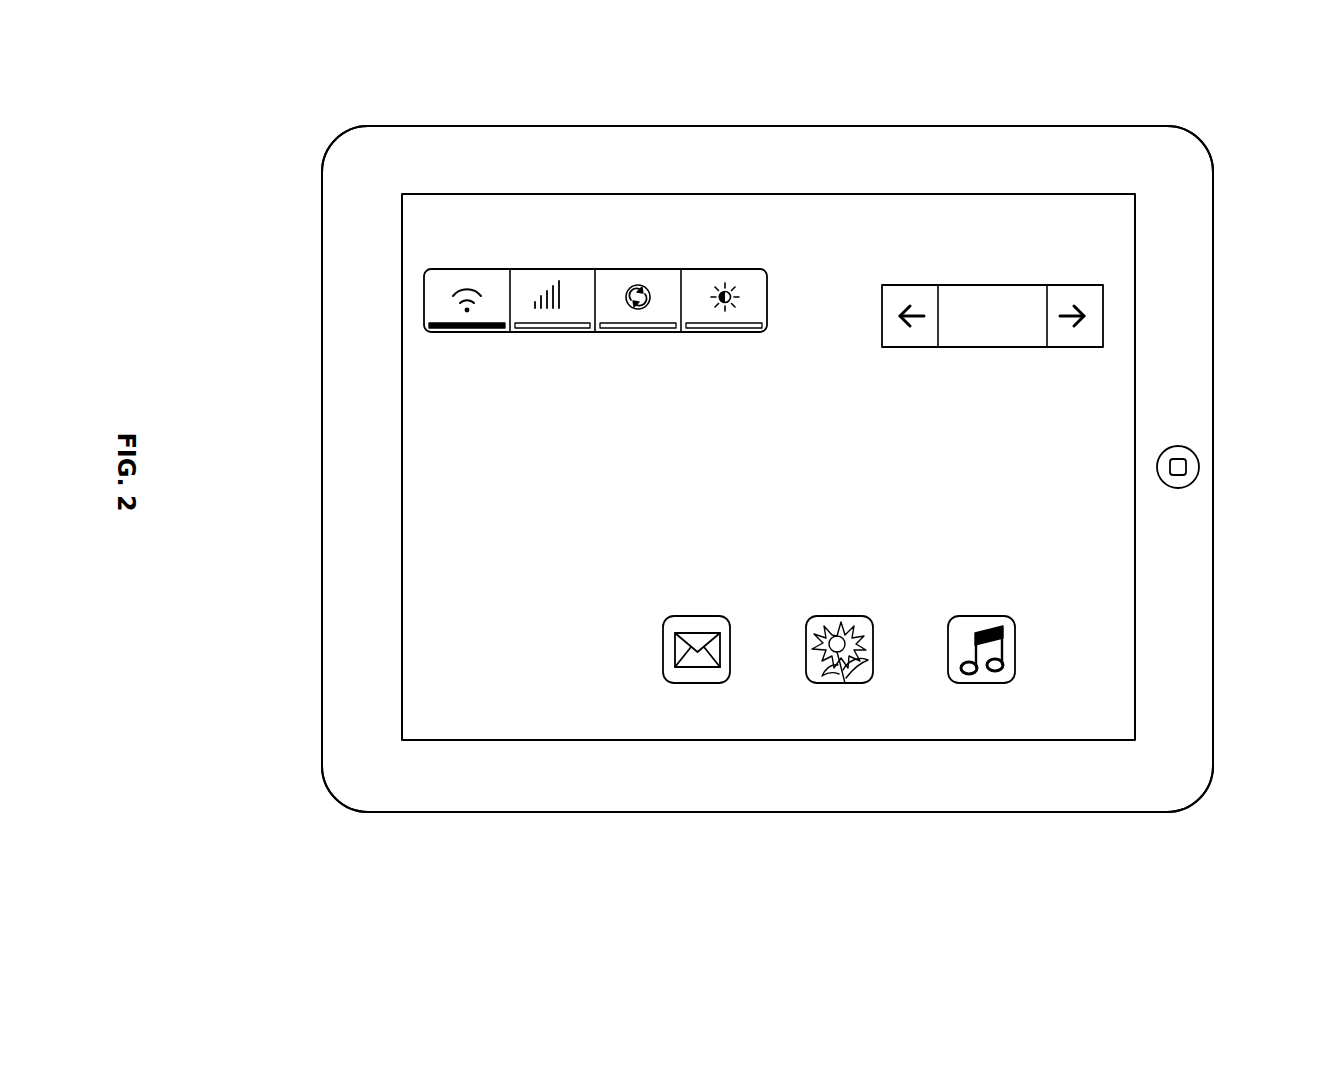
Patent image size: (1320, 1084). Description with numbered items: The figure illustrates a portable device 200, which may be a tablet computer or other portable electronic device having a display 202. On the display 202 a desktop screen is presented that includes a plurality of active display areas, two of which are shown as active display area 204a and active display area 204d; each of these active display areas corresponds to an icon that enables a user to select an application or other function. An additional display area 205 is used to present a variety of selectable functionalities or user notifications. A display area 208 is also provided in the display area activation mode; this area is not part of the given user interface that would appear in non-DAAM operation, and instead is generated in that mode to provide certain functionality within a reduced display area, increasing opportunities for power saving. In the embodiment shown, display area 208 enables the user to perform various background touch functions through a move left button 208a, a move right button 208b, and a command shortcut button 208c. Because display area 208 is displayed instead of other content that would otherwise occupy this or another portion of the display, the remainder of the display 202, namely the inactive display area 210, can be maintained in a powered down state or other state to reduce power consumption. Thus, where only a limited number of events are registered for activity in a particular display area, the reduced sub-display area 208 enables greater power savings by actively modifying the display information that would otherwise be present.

The portable device 200 is at (441, 90).
The display 202 is at (334, 148).
The active display area 204a is at (556, 682).
The active display area 204d is at (980, 685).
The additional display area 205 is at (437, 300).
The display area 208 is at (1016, 260).
The move left button 208a is at (882, 316).
The move right button 208b is at (1103, 315).
The command shortcut button 208c is at (975, 300).
The inactive display area 210 is at (425, 569).